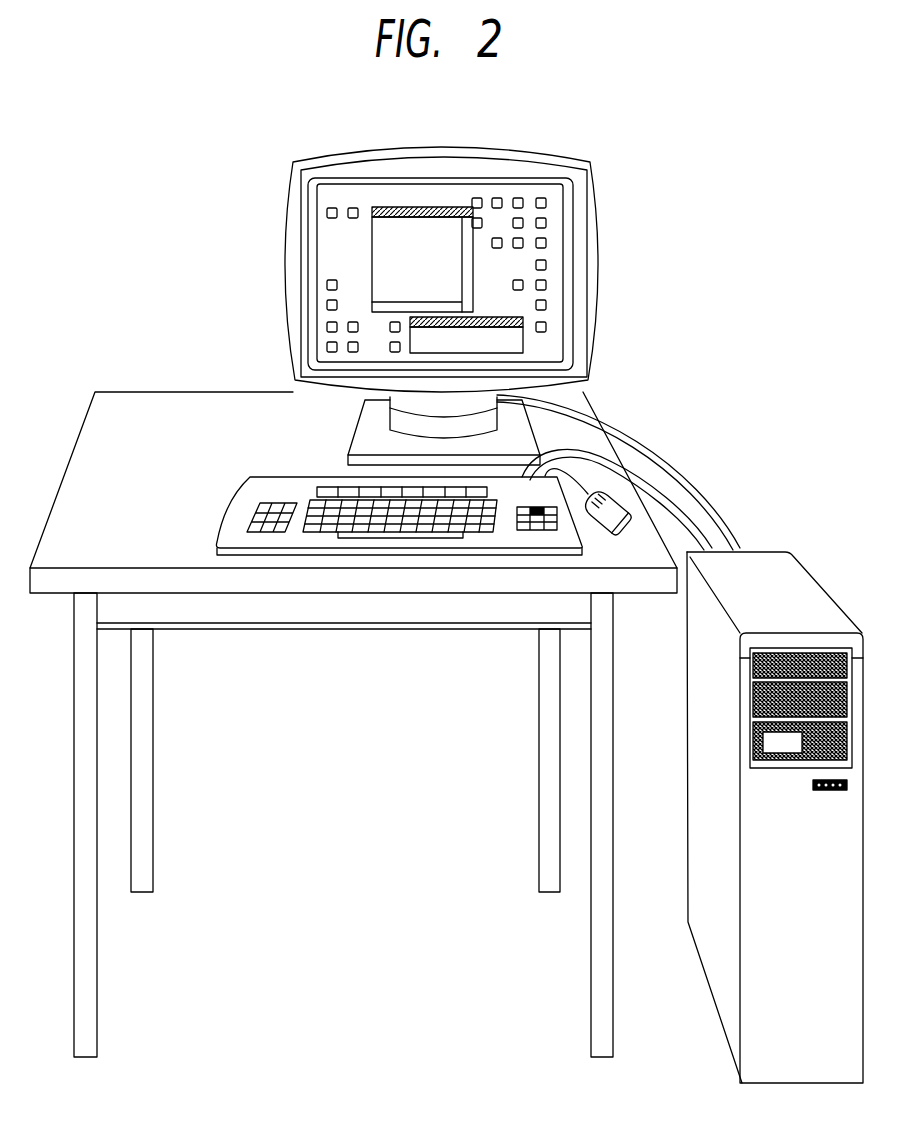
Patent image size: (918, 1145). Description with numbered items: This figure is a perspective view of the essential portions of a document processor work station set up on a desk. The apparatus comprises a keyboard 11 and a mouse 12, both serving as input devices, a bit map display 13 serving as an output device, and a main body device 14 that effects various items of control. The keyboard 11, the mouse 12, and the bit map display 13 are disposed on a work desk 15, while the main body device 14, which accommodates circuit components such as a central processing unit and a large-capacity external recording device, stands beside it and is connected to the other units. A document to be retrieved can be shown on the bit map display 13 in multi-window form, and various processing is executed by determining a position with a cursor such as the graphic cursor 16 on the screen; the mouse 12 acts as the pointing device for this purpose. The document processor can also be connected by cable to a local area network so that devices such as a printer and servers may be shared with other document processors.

The keyboard 11 is at (240, 517).
The mouse 12 is at (628, 528).
The bit map display 13 is at (372, 166).
The main body device 14 is at (765, 568).
The work desk 15 is at (212, 408).
The graphic cursor 16 is at (498, 274).